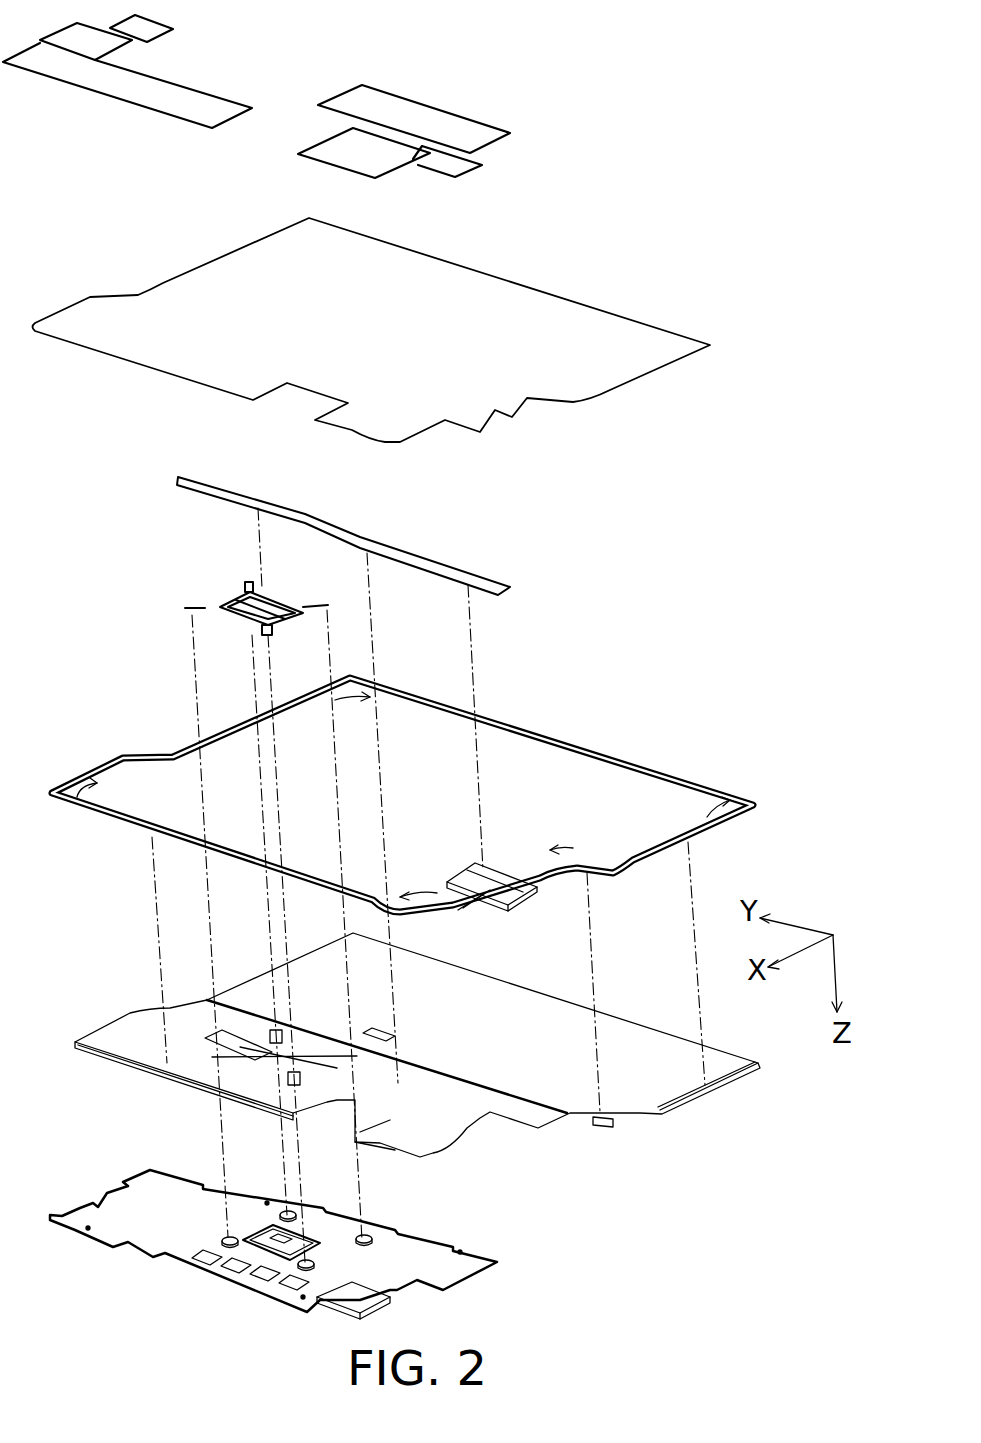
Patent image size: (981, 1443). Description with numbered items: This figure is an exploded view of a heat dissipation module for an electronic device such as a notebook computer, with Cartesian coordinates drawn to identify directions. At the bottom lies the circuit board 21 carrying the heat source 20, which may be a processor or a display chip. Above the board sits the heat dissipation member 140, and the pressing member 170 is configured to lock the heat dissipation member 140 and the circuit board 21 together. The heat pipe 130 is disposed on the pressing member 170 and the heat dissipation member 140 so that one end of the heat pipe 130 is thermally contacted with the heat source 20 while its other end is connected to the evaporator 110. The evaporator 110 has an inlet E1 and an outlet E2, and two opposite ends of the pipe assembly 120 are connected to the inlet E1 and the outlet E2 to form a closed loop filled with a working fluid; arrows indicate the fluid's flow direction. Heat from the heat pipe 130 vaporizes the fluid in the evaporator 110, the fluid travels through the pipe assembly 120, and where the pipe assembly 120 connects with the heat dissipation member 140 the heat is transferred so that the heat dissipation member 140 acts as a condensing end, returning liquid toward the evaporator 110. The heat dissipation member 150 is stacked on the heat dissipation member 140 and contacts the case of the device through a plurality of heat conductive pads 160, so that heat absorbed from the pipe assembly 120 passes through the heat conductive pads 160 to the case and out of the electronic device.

The heat source 20 is at (282, 1247).
The circuit board 21 is at (168, 1233).
The evaporator 110 is at (503, 873).
The pipe assembly 120 is at (670, 842).
The heat pipe 130 is at (488, 585).
The heat dissipation member 140 is at (640, 1115).
The heat dissipation member 150 is at (683, 333).
The heat conductive pads 160 is at (533, 80).
The pressing member 170 is at (200, 606).
The inlet E1 is at (545, 883).
The outlet E2 is at (490, 897).